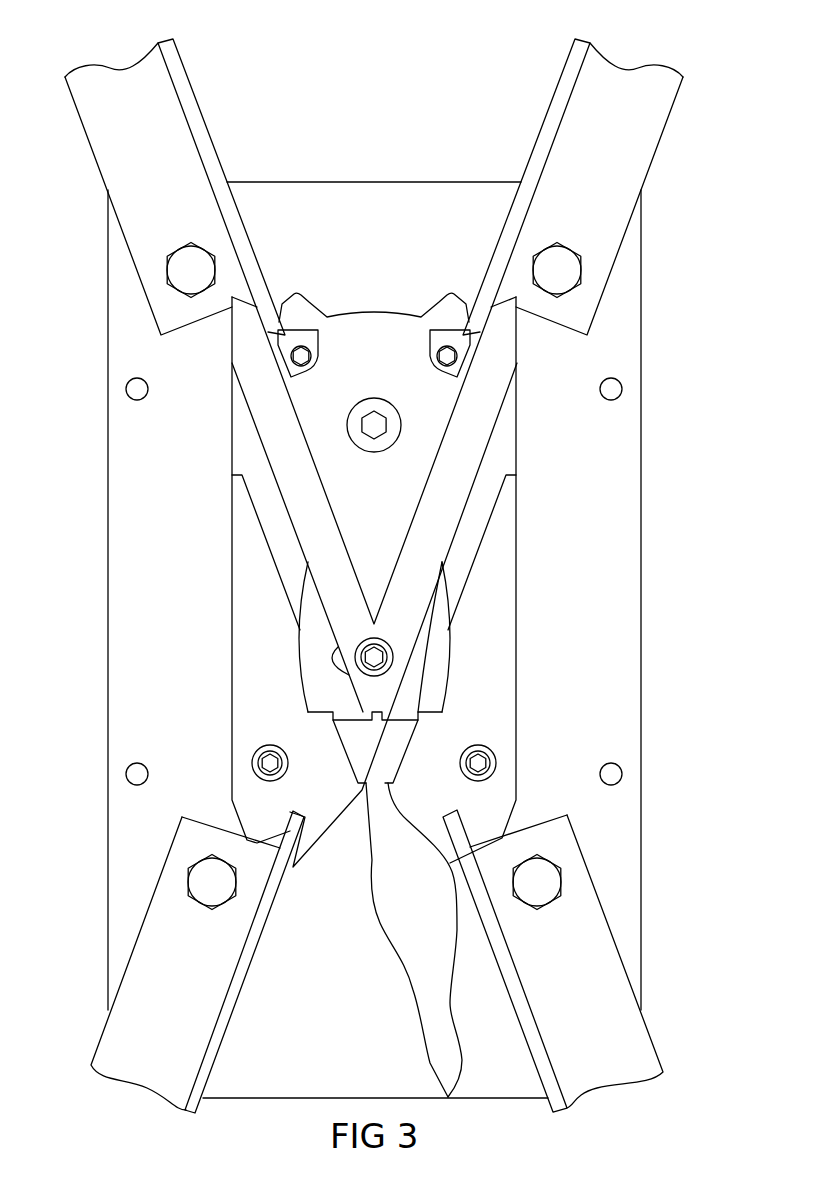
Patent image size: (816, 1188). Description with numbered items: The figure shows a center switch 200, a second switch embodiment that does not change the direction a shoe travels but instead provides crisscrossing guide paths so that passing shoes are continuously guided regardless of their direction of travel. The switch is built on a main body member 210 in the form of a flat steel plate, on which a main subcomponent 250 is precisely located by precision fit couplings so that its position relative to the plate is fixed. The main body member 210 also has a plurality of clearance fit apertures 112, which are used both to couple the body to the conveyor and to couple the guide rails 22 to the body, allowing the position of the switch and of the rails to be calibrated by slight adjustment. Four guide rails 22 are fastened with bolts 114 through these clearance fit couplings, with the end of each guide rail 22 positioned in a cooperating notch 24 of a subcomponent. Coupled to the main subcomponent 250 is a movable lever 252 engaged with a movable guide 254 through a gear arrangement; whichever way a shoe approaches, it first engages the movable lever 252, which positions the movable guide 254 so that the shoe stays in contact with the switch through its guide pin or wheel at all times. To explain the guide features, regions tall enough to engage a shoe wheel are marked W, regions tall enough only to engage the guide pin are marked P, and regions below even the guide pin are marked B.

The center switch 200 is at (282, 128).
The guide rail 22 is at (100, 122).
The cooperating notch 24 is at (283, 337).
The bolt 114 is at (190, 270).
The clearance fit aperture 112 is at (621, 387).
The main body member 210 is at (123, 602).
The main subcomponent 250 is at (502, 592).
The movable lever 252 is at (417, 972).
The movable guide 254 is at (380, 733).
The wheel-engaging area W is at (374, 449).
The guide-pin-engaging area P is at (372, 633).
The below-pin area B is at (373, 627).